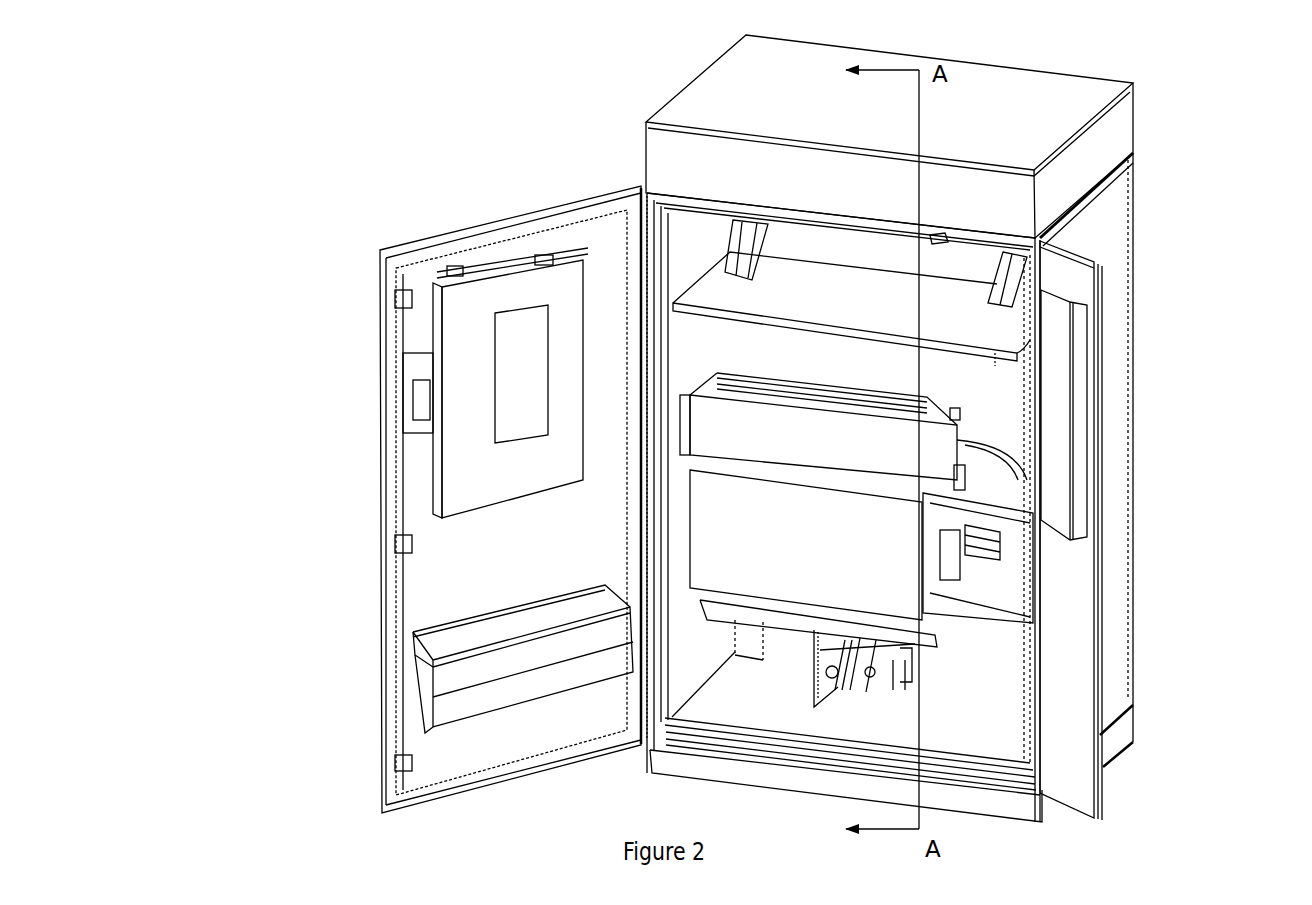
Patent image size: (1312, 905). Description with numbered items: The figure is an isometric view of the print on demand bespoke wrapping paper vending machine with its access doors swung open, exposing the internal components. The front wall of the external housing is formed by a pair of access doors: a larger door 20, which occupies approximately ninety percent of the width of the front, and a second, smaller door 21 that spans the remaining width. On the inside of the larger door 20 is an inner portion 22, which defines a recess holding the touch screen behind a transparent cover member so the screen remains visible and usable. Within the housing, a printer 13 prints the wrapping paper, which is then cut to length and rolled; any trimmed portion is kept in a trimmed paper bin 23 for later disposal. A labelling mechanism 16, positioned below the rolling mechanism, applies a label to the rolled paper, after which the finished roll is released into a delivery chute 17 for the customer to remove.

The printer 13 is at (810, 305).
The labelling mechanism 16 is at (938, 658).
The delivery chute 17 is at (468, 612).
The larger door 20 is at (565, 535).
The smaller door 21 is at (1077, 627).
The inner portion 22 is at (480, 467).
The trimmed paper bin 23 is at (815, 545).